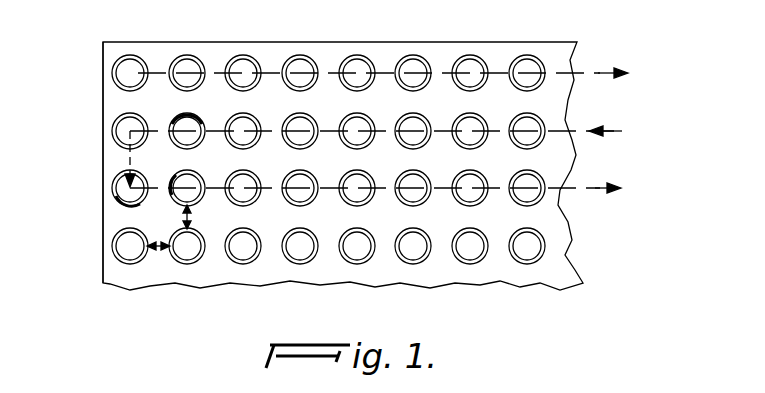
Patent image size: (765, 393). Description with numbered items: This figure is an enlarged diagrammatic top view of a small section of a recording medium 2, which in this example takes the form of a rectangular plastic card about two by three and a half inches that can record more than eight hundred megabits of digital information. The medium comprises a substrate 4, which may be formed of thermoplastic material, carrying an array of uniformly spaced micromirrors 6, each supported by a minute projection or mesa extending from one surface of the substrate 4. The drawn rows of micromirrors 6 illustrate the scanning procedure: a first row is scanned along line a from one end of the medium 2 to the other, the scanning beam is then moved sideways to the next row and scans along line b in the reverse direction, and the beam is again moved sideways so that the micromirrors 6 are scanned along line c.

The recording medium 2 is at (98, 176).
The substrate 4 is at (103, 116).
The micromirrors 6 is at (133, 66).
The line a is at (495, 68).
The line b is at (496, 126).
The line c is at (497, 182).